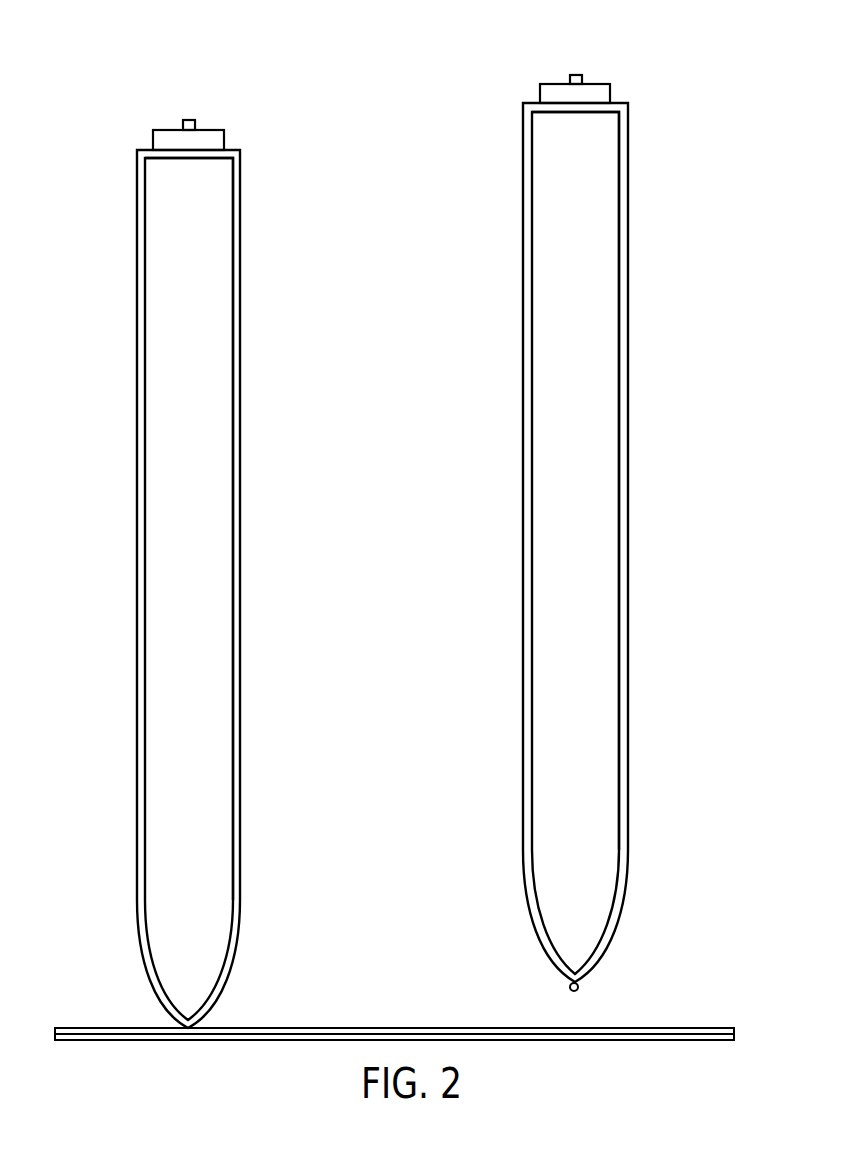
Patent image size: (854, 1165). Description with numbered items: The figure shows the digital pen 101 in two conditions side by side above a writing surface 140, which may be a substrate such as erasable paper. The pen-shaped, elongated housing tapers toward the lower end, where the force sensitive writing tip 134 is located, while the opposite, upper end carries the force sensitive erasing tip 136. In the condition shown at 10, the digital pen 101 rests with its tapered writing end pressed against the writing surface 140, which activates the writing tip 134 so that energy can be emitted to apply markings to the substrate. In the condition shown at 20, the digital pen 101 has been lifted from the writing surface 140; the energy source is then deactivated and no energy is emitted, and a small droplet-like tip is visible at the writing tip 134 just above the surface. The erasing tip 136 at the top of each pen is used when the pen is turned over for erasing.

The writing tip activated state 10 is at (122, 192).
The lifted pen state 20 is at (508, 146).
The digital pen 101 is at (203, 547).
The force sensitive writing tip 134 is at (579, 987).
The force sensitive erasing tip 136 is at (190, 119).
The writing surface 140 is at (729, 1005).